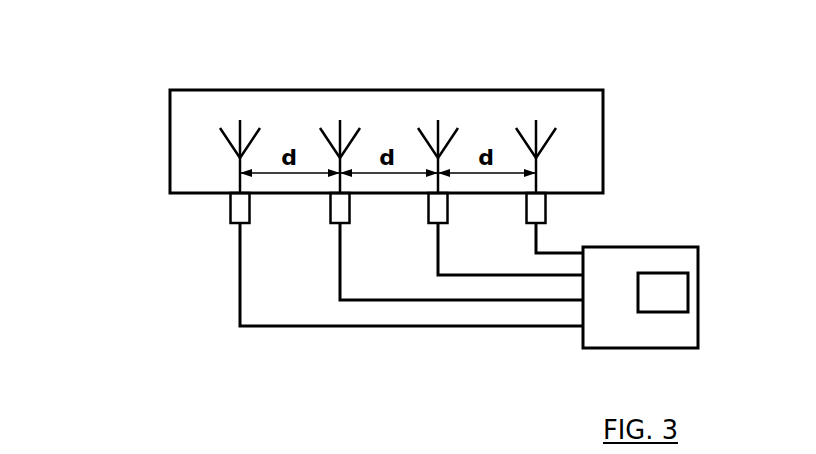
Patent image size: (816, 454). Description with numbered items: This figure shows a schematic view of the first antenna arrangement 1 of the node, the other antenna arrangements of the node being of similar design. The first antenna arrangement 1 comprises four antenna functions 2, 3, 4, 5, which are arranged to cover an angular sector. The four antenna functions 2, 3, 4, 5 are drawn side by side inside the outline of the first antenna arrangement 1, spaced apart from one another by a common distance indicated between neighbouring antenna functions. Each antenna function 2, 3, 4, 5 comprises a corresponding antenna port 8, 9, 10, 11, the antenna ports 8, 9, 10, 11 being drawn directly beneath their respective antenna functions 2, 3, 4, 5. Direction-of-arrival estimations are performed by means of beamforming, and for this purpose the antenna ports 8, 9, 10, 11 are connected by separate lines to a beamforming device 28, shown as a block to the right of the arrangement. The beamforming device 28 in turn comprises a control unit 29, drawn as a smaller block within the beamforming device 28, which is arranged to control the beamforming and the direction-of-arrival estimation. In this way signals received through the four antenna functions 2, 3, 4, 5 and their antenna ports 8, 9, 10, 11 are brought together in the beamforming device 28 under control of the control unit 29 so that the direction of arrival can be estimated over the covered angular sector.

The first antenna arrangement 1 is at (188, 140).
The antenna function 2 is at (259, 112).
The antenna function 3 is at (356, 114).
The antenna function 4 is at (452, 116).
The antenna function 5 is at (552, 117).
The antenna port 8 is at (240, 212).
The antenna port 9 is at (340, 212).
The antenna port 10 is at (440, 212).
The antenna port 11 is at (545, 212).
The beamforming device 28 is at (631, 294).
The control unit 29 is at (655, 290).